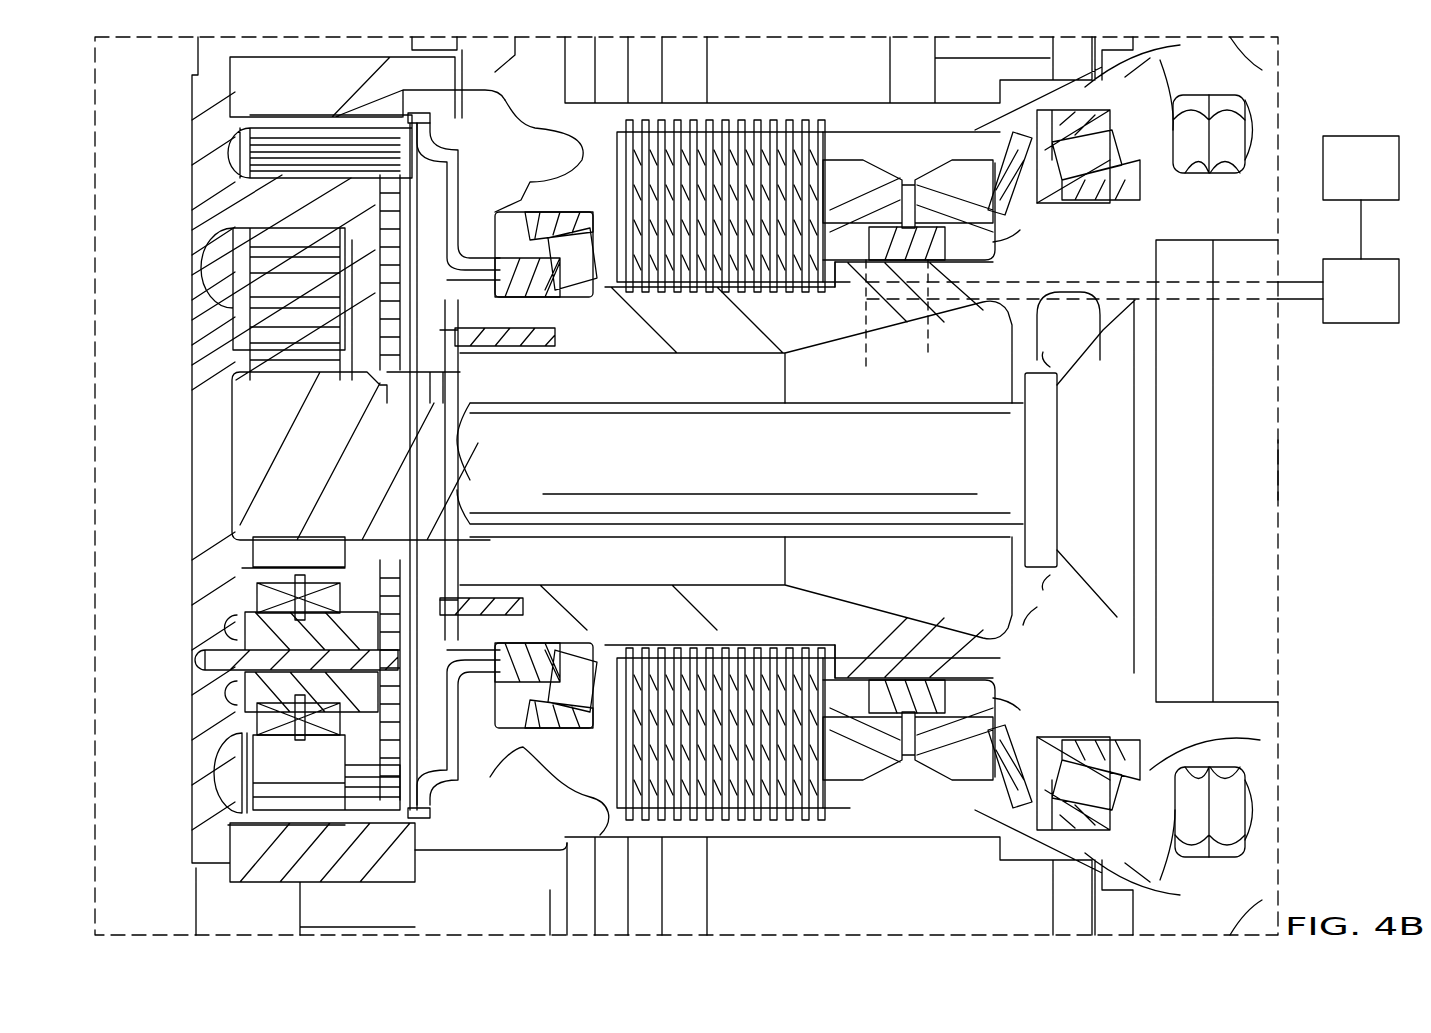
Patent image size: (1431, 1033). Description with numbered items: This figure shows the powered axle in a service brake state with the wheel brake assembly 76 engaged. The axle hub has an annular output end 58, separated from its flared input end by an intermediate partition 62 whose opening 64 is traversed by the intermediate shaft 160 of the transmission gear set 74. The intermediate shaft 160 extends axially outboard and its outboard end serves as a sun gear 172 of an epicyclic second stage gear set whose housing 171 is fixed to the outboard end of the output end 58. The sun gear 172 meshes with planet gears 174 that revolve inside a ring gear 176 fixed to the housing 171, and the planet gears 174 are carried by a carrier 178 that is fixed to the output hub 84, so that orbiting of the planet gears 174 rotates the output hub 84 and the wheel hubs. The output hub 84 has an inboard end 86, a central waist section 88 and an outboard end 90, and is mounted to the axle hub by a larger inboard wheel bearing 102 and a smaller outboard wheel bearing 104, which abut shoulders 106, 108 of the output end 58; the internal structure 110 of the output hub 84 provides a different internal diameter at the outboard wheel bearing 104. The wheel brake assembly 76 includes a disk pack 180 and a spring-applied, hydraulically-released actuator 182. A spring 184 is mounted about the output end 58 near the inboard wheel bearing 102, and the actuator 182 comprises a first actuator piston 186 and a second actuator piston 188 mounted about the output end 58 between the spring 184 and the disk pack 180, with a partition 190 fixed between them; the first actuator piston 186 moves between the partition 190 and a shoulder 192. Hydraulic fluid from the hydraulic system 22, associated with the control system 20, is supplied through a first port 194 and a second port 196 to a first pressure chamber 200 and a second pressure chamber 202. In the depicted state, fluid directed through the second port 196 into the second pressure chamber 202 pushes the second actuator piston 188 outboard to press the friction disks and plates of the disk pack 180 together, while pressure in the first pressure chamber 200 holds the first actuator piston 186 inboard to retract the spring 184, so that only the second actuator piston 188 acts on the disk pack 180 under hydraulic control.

The control system 20 is at (1361, 197).
The hydraulic system 22 is at (1361, 291).
The output end 58 is at (882, 632).
The intermediate partition 62 is at (1043, 365).
The opening 64 is at (1040, 603).
The transmission gear set 74 is at (1234, 488).
The wheel brake assembly 76 is at (838, 793).
The output hub 84 is at (1130, 862).
The inboard end 86 is at (1123, 850).
The central waist section 88 is at (838, 830).
The outboard end 90 is at (400, 870).
The wheel bearing 102 is at (1130, 170).
The wheel bearing 104 is at (552, 333).
The shoulder 106 is at (1205, 52).
The shoulder 108 is at (540, 210).
The internal structure 110 is at (553, 193).
The intermediate shaft 160 is at (150, 347).
The housing 171 is at (432, 160).
The sun gear 172 is at (262, 525).
The planet gears 174 is at (215, 270).
The ring gear 176 is at (225, 145).
The carrier 178 is at (215, 190).
The disk pack 180 is at (750, 150).
The actuator 182 is at (907, 166).
The spring 184 is at (1020, 165).
The first actuator piston 186 is at (995, 243).
The second actuator piston 188 is at (742, 290).
The partition 190 is at (903, 262).
The shoulder 192 is at (1105, 308).
The first port 194 is at (945, 313).
The second port 196 is at (878, 312).
The first pressure chamber 200 is at (1125, 268).
The second pressure chamber 202 is at (790, 337).